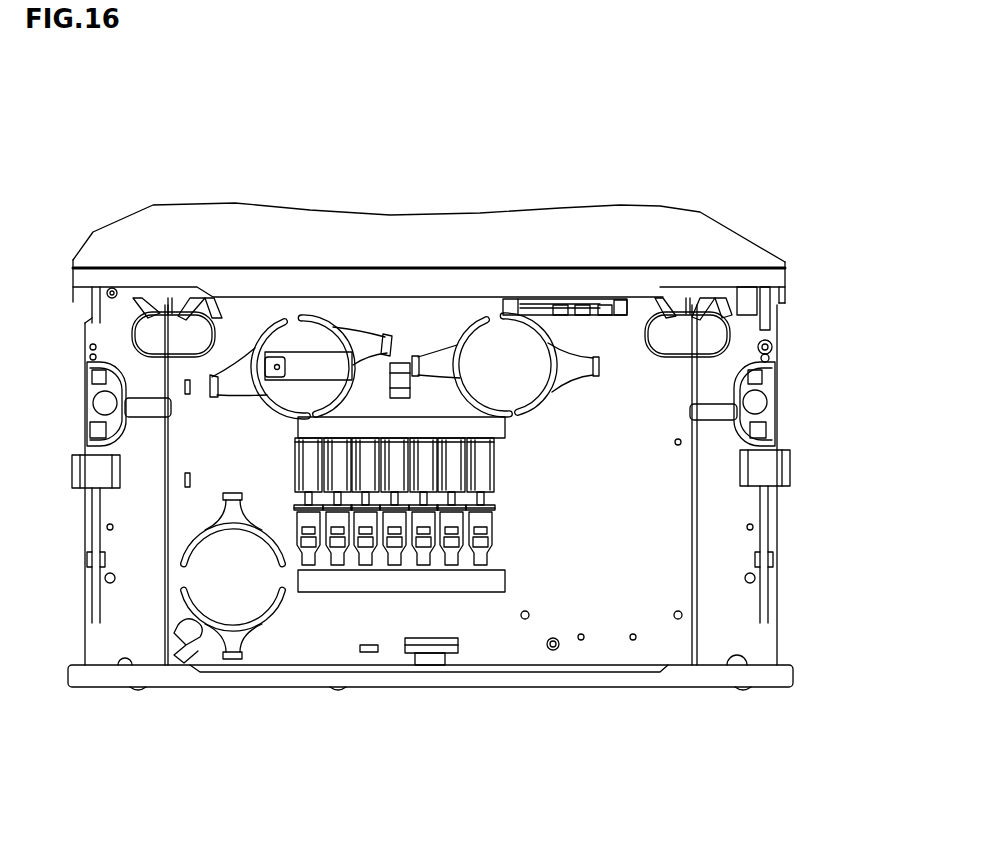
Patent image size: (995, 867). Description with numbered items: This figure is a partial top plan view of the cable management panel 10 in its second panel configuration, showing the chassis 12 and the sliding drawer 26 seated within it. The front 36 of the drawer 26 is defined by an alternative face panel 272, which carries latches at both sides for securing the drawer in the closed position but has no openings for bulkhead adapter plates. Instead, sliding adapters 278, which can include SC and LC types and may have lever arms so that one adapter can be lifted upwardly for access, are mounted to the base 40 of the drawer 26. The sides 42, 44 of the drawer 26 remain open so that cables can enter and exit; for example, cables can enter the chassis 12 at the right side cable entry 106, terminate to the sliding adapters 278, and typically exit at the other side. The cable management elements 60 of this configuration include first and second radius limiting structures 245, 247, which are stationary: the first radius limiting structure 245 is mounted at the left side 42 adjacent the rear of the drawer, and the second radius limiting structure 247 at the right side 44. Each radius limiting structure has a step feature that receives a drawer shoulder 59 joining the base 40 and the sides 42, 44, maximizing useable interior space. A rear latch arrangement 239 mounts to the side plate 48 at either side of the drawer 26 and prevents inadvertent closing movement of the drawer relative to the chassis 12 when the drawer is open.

The cable management panel 10 is at (229, 119).
The chassis 12 is at (652, 200).
The drawer 26 is at (737, 712).
The front 36 is at (621, 756).
The base 40 is at (590, 562).
The left side 42 is at (120, 541).
The right side 44 is at (745, 596).
The side plate 48 is at (152, 465).
The drawer shoulder 59 is at (170, 430).
The cable management elements 60 is at (213, 266).
The right side cable entry 106 is at (804, 433).
The rear latch arrangement 239 is at (769, 273).
The first radius limiting structure 245 is at (150, 300).
The second radius limiting structure 247 is at (657, 300).
The face panel 272 is at (327, 688).
The sliding adapters 278 is at (457, 520).